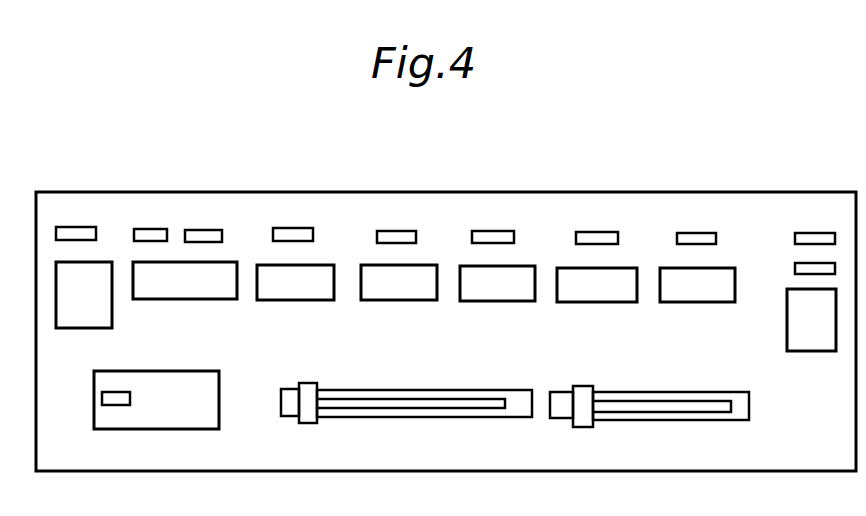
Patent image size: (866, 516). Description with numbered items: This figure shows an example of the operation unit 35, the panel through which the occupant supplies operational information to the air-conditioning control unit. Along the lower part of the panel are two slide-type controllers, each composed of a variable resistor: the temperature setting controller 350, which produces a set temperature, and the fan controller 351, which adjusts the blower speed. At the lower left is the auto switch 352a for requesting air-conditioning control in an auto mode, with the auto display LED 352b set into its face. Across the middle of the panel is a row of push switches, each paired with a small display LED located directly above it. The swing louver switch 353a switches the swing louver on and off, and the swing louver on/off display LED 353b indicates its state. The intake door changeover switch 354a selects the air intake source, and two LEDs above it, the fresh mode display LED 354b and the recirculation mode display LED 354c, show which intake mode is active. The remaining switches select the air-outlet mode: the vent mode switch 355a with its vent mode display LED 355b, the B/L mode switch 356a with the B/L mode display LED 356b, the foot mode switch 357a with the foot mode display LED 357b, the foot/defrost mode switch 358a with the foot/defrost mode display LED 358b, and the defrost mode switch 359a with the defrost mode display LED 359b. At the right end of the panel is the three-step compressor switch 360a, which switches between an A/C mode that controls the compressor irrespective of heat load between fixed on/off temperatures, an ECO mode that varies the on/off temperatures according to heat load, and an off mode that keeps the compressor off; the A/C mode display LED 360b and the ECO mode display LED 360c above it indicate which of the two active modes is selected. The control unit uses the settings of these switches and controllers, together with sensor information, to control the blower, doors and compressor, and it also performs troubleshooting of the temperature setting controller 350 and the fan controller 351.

The operation unit 35 is at (454, 191).
The temperature setting controller 350 is at (400, 418).
The fan controller 351 is at (665, 421).
The auto switch 352a is at (171, 430).
The auto display LED 352b is at (102, 399).
The swing louver switch 353a is at (92, 329).
The swing louver on/off display LED 353b is at (79, 227).
The intake door changeover switch 354a is at (178, 300).
The fresh mode display LED 354b is at (159, 229).
The recirculation mode display LED 354c is at (217, 230).
The vent mode switch 355a is at (292, 301).
The vent mode display LED 355b is at (301, 228).
The B/L mode switch 356a is at (396, 301).
The B/L mode display LED 356b is at (399, 231).
The foot mode switch 357a is at (492, 302).
The foot mode display LED 357b is at (495, 231).
The foot/defrost mode switch 358a is at (595, 303).
The foot/defrost mode display LED 358b is at (595, 232).
The defrost mode switch 359a is at (705, 303).
The defrost mode display LED 359b is at (695, 233).
The three-step compressor switch 360a is at (791, 352).
The A/C mode display LED 360b is at (798, 233).
The ECO mode display LED 360c is at (795, 266).